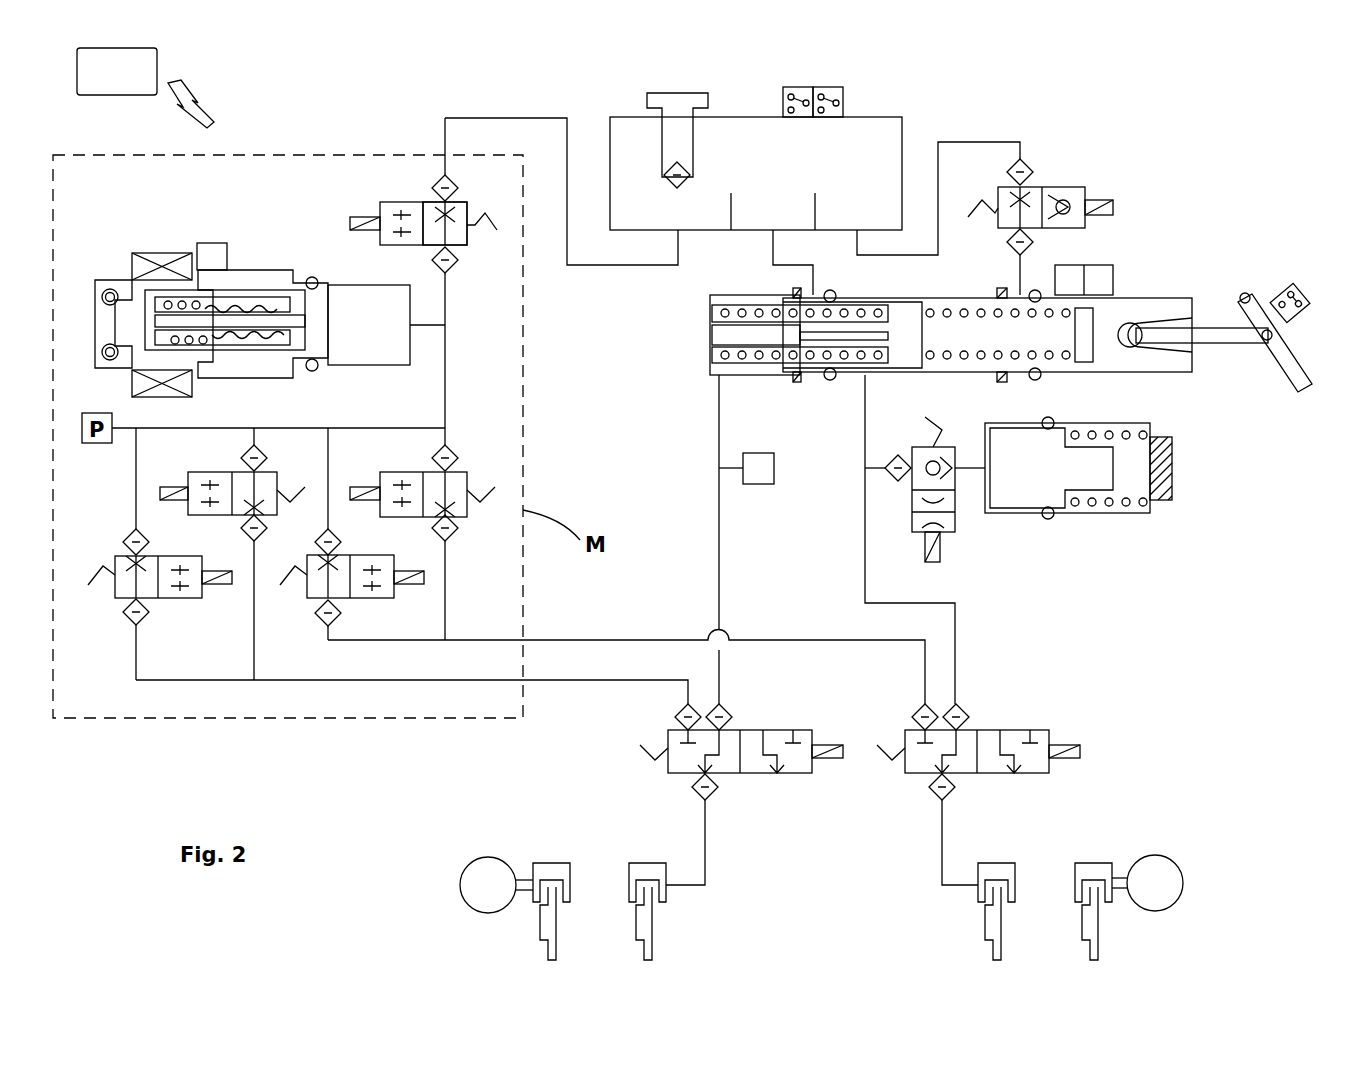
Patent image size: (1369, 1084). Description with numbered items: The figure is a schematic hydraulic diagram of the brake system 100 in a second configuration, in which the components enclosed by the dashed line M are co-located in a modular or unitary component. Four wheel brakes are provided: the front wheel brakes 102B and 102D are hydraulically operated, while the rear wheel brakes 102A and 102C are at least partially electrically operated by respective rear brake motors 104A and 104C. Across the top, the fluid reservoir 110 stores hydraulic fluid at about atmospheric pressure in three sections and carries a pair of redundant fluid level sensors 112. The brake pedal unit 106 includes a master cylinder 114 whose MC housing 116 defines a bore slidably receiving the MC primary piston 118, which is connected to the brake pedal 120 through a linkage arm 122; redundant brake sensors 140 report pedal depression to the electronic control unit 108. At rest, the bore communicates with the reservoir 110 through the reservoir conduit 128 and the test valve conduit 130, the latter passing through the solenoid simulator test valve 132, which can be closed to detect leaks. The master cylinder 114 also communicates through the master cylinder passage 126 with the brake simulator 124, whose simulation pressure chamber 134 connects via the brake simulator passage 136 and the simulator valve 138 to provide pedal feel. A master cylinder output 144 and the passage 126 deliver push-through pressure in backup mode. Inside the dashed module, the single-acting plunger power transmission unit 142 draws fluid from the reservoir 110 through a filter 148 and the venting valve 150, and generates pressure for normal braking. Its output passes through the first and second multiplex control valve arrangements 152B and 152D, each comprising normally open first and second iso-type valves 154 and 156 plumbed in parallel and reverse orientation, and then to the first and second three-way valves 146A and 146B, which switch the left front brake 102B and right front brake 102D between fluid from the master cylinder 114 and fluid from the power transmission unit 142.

The brake system 100 is at (1194, 118).
The wheel brake 102A is at (1113, 866).
The wheel brake 102B is at (668, 893).
The wheel brake 102C is at (531, 866).
The wheel brake 102D is at (1016, 880).
The rear brake motor 104A is at (1183, 878).
The rear brake motor 104C is at (460, 885).
The brake pedal unit 106 is at (1224, 246).
The electronic control unit 108 is at (145, 88).
The fluid reservoir 110 is at (900, 112).
The fluid level sensor 112 is at (828, 87).
The master cylinder 114 is at (702, 360).
The MC housing 116 is at (930, 293).
The MC primary piston 118 is at (1106, 320).
The brake pedal 120 is at (1294, 332).
The linkage arm 122 is at (1213, 345).
The brake simulator 124 is at (1103, 534).
The master cylinder passage 126 is at (868, 400).
The reservoir conduit 128 is at (773, 255).
The test valve conduit 130 is at (1022, 270).
The simulator test valve 132 is at (1074, 178).
The simulation pressure chamber 134 is at (1013, 513).
The brake simulator passage 136 is at (876, 470).
The simulator valve 138 is at (951, 541).
The brake sensor 140 is at (1105, 265).
The power transmission unit 142 is at (276, 245).
The master cylinder output 144 is at (719, 424).
The first three-way valve 146A is at (762, 714).
The second three-way valve 146B is at (1012, 714).
The filter 148 is at (415, 203).
The venting valve 150 is at (472, 247).
The first multiplex control valve arrangement 152B is at (150, 690).
The second multiplex control valve arrangement 152D is at (366, 690).
The first iso-type valve 154 is at (164, 598).
The second iso-type valve 156 is at (226, 472).